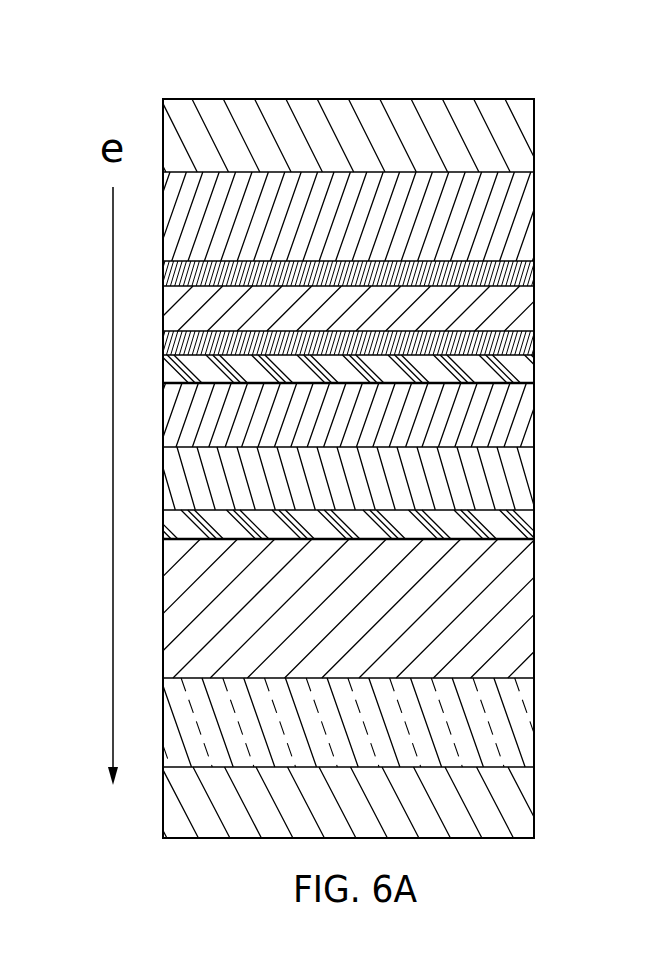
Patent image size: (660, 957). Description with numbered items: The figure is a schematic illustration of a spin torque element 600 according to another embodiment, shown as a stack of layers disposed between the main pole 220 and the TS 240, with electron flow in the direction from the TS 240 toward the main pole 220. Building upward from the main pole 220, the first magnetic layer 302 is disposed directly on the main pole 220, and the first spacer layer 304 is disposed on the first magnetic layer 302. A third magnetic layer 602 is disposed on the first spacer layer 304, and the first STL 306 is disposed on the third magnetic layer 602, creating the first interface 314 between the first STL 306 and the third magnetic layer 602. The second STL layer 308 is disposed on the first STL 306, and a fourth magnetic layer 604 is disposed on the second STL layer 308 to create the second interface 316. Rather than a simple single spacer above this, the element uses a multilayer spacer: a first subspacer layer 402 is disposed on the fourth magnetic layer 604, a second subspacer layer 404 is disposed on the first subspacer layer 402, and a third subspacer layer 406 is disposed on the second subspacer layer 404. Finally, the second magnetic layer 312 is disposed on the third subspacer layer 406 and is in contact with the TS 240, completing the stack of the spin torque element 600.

The spin torque element 600 is at (138, 44).
The TS 240 is at (372, 151).
The second magnetic layer 312 is at (372, 233).
The third subspacer layer 406 is at (523, 276).
The second subspacer layer 404 is at (372, 321).
The first subspacer layer 402 is at (523, 344).
The fourth magnetic layer 604 is at (528, 372).
The second interface 316 is at (512, 367).
The second STL layer 308 is at (372, 428).
The first STL 306 is at (372, 493).
The third magnetic layer 602 is at (523, 527).
The first interface 314 is at (496, 520).
The first spacer layer 304 is at (372, 620).
The first magnetic layer 302 is at (372, 736).
The main pole 220 is at (372, 816).